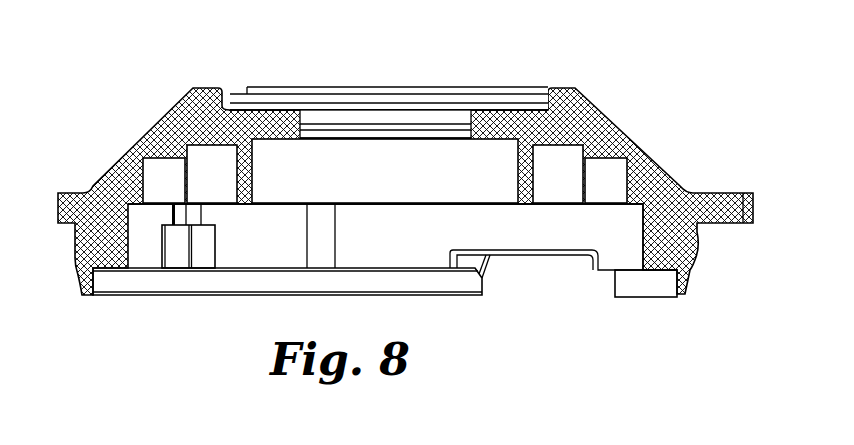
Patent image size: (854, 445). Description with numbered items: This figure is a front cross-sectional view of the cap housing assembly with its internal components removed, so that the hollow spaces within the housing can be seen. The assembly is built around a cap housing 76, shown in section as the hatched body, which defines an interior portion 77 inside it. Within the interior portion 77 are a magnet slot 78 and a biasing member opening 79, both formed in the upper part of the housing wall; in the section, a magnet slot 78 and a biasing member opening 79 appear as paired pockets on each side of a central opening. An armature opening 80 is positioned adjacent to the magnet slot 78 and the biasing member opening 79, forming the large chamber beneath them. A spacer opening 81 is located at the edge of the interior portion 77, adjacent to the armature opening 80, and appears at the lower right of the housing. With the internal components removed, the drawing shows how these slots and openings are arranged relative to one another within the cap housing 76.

The cap housing 76 is at (578, 103).
The interior portion 77 is at (453, 318).
The magnet slot 78 is at (163, 183).
The biasing member opening 79 is at (222, 170).
The armature opening 80 is at (614, 231).
The spacer opening 81 is at (633, 287).